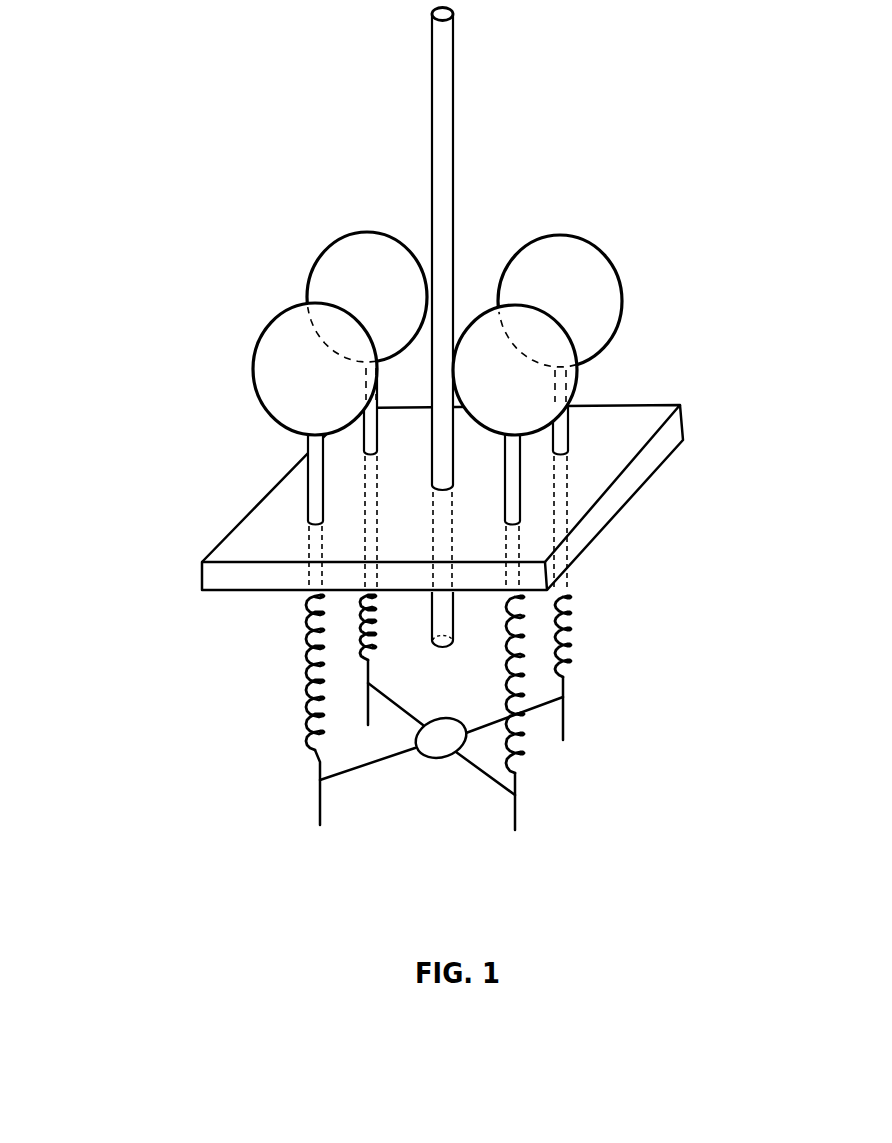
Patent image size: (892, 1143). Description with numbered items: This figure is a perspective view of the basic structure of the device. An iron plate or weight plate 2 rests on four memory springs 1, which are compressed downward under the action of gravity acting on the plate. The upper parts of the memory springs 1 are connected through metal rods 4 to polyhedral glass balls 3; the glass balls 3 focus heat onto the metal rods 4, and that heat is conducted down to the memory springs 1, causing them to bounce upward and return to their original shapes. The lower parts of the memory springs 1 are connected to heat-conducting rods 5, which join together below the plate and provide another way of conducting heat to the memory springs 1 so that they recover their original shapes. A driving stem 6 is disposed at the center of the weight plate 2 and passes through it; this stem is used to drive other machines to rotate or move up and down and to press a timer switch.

The memory springs 1 is at (568, 632).
The weight plate 2 is at (263, 542).
The polyhedral glass balls 3 is at (588, 303).
The metal rods 4 is at (317, 483).
The heat-conducting rods 5 is at (517, 810).
The driving stem 6 is at (447, 128).